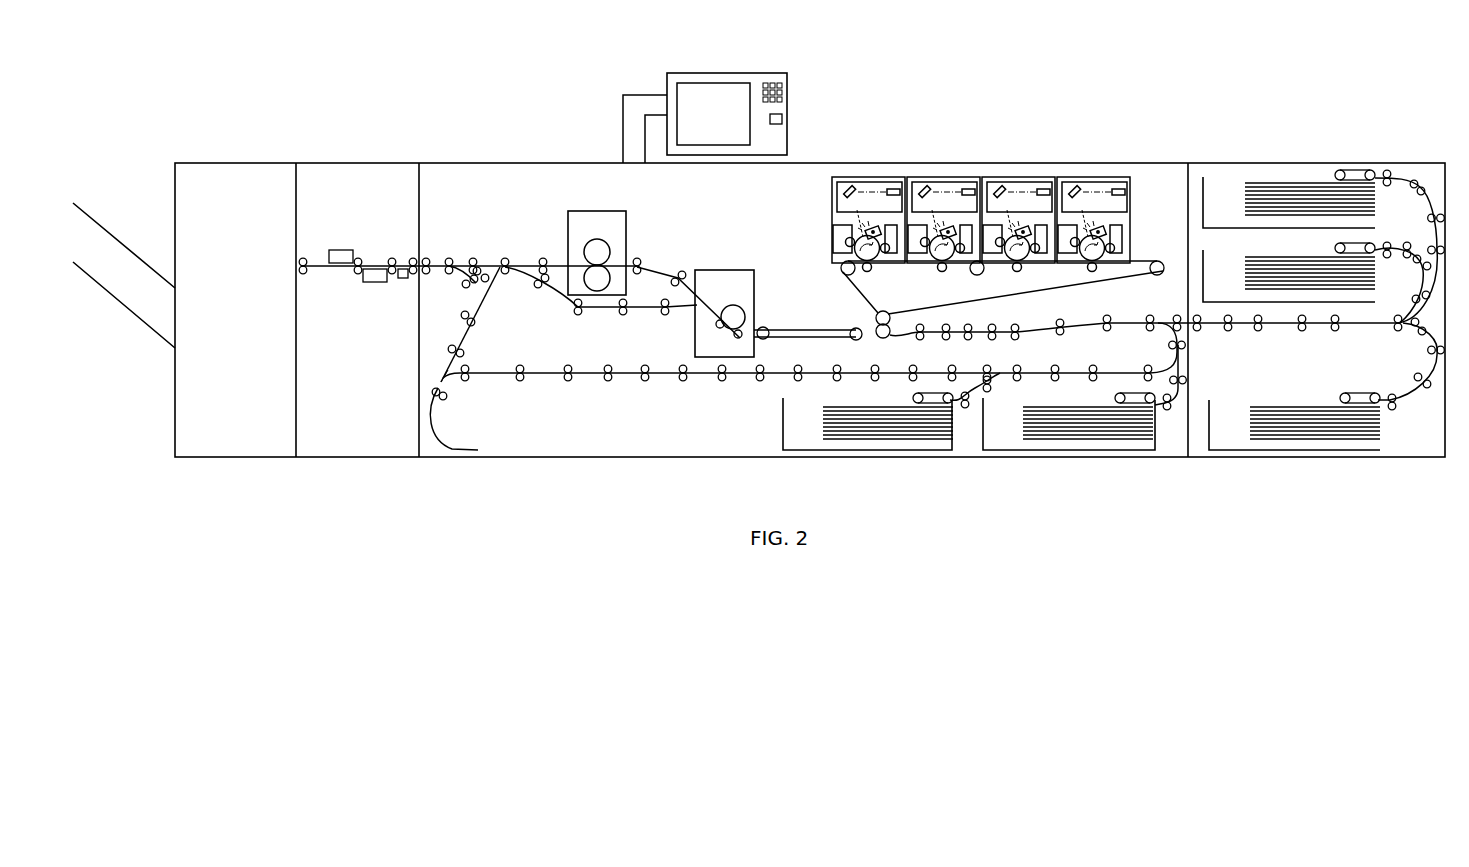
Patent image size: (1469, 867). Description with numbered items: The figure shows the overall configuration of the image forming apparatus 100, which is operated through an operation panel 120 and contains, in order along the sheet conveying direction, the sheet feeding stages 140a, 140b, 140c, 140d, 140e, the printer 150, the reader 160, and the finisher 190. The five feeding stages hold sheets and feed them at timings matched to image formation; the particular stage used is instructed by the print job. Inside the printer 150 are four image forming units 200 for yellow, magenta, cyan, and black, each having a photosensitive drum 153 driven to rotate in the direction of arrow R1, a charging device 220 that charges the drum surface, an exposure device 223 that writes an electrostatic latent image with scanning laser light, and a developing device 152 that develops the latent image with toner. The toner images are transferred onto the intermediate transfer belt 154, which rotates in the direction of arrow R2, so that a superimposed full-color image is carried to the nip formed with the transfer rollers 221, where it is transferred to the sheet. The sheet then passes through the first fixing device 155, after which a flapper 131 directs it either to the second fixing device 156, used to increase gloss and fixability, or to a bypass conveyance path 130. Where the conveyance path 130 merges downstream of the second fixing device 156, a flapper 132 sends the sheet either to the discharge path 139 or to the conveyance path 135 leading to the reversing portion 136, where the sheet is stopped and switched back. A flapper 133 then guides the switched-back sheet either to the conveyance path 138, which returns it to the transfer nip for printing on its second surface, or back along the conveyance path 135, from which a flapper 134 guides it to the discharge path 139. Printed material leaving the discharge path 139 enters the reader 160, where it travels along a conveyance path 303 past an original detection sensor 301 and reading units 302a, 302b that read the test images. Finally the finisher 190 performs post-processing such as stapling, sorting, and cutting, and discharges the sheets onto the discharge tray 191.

The image forming apparatus 100 is at (934, 52).
The operation panel 120 is at (788, 88).
The finisher 190 is at (238, 163).
The reader 160 is at (357, 163).
The printer 150 is at (498, 163).
The discharge tray 191 is at (110, 221).
The reading unit 302b is at (340, 250).
The reading unit 302a is at (370, 283).
The conveyance path 303 is at (382, 263).
The original detection sensor 301 is at (405, 280).
The discharge path 139 is at (440, 262).
The flapper 132 is at (503, 262).
The flapper 134 is at (478, 286).
The conveyance path 135 is at (457, 338).
The flapper 133 is at (463, 381).
The reversing portion 136 is at (480, 450).
The conveyance path 138 is at (520, 380).
The second fixing device 156 is at (595, 211).
The conveyance path 130 is at (598, 312).
The flapper 131 is at (688, 310).
The first fixing device 155 is at (722, 269).
The image forming unit 200 is at (890, 163).
The exposure device 223 is at (840, 180).
The charging device 220 is at (866, 235).
The developing device 152 is at (832, 240).
The photosensitive drum 153 is at (855, 253).
The rotation direction of photosensitive drum R1 is at (880, 262).
The rotation direction of intermediate transfer belt R2 is at (950, 297).
The intermediate transfer belt 154 is at (1087, 290).
The transfer rollers 221 is at (890, 336).
The sheet feeding stage 140a is at (920, 450).
The sheet feeding stage 140b is at (1123, 450).
The sheet feeding stage 140c is at (1378, 212).
The sheet feeding stage 140d is at (1378, 278).
The sheet feeding stage 140e is at (1380, 430).